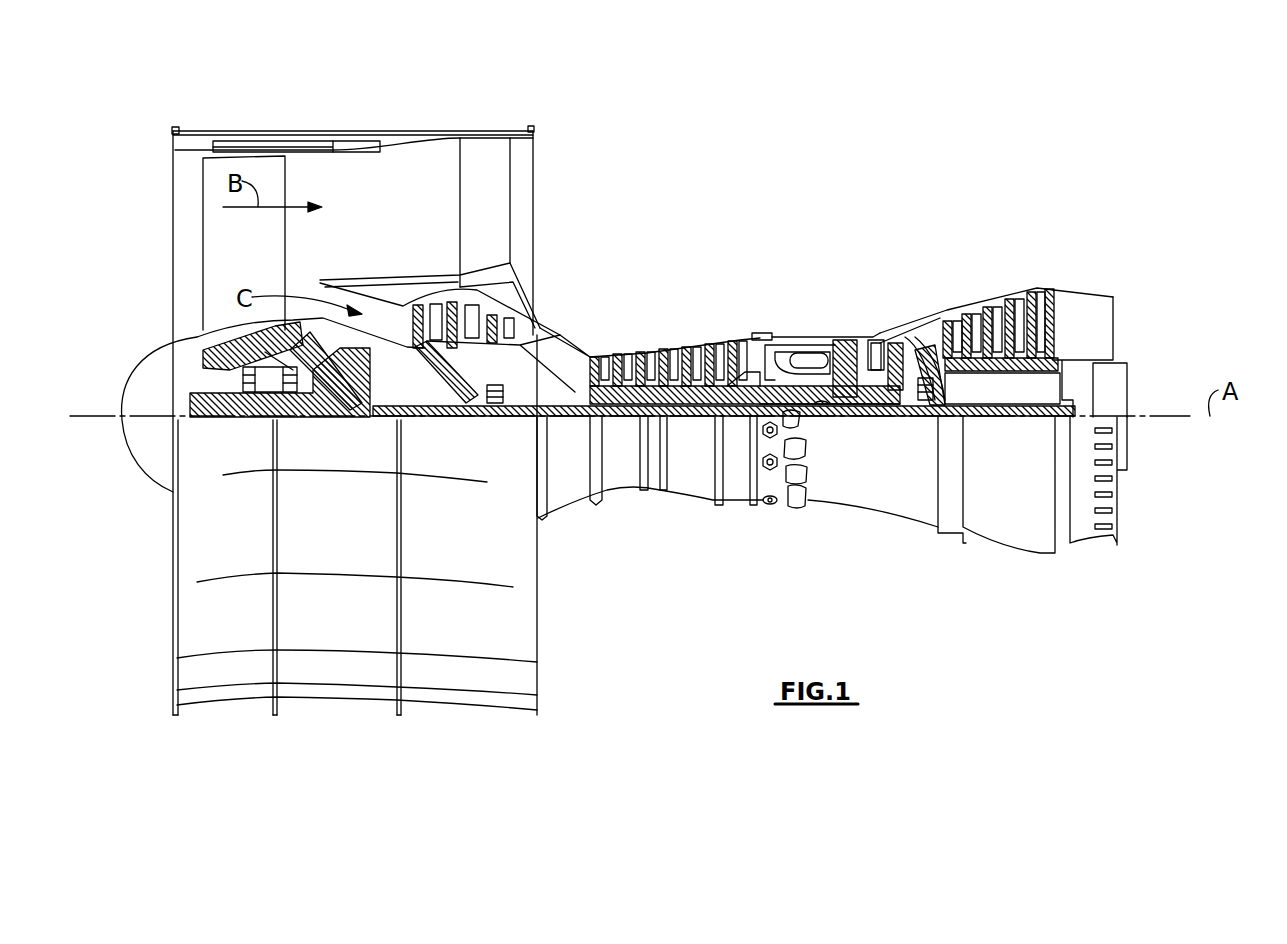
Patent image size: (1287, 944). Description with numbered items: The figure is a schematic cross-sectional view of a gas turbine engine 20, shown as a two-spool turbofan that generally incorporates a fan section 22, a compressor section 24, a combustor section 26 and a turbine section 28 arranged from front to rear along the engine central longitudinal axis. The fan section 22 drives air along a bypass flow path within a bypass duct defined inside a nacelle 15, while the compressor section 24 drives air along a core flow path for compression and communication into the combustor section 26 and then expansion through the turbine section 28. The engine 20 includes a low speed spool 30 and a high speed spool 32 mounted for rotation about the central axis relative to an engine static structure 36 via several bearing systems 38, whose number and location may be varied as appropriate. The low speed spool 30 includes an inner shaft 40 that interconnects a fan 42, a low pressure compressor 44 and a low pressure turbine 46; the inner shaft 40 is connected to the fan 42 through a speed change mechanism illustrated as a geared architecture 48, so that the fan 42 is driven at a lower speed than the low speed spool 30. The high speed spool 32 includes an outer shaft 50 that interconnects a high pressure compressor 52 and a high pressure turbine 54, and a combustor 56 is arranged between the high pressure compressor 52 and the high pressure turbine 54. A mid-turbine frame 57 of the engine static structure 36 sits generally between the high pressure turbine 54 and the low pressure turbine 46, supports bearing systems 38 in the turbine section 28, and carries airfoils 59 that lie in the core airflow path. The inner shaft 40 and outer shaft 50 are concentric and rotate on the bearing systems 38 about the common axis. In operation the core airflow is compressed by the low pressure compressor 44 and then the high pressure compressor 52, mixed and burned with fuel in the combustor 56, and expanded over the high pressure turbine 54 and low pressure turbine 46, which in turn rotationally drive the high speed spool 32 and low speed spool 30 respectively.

The nacelle 15 is at (357, 138).
The gas turbine engine 20 is at (822, 181).
The fan section 22 is at (286, 118).
The compressor section 24 is at (591, 324).
The combustor section 26 is at (808, 306).
The turbine section 28 is at (959, 270).
The low speed spool 30 is at (694, 430).
The high speed spool 32 is at (731, 383).
The engine static structure 36 is at (735, 513).
The bearing systems 38 is at (497, 402).
The inner shaft 40 is at (556, 417).
The fan 42 is at (258, 263).
The low pressure compressor 44 is at (458, 326).
The low pressure turbine 46 is at (1005, 302).
The geared architecture 48 is at (360, 400).
The outer shaft 50 is at (822, 412).
The high pressure compressor 52 is at (667, 387).
The high pressure turbine 54 is at (877, 350).
The combustor 56 is at (812, 357).
The mid-turbine frame 57 is at (921, 324).
The airfoils 59 is at (937, 370).